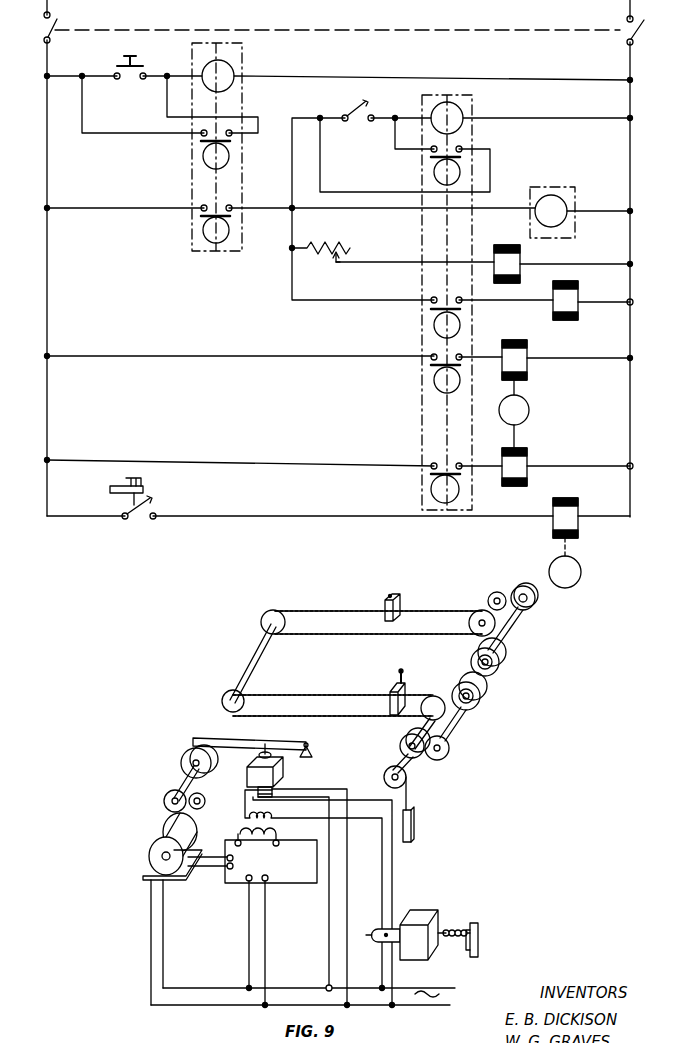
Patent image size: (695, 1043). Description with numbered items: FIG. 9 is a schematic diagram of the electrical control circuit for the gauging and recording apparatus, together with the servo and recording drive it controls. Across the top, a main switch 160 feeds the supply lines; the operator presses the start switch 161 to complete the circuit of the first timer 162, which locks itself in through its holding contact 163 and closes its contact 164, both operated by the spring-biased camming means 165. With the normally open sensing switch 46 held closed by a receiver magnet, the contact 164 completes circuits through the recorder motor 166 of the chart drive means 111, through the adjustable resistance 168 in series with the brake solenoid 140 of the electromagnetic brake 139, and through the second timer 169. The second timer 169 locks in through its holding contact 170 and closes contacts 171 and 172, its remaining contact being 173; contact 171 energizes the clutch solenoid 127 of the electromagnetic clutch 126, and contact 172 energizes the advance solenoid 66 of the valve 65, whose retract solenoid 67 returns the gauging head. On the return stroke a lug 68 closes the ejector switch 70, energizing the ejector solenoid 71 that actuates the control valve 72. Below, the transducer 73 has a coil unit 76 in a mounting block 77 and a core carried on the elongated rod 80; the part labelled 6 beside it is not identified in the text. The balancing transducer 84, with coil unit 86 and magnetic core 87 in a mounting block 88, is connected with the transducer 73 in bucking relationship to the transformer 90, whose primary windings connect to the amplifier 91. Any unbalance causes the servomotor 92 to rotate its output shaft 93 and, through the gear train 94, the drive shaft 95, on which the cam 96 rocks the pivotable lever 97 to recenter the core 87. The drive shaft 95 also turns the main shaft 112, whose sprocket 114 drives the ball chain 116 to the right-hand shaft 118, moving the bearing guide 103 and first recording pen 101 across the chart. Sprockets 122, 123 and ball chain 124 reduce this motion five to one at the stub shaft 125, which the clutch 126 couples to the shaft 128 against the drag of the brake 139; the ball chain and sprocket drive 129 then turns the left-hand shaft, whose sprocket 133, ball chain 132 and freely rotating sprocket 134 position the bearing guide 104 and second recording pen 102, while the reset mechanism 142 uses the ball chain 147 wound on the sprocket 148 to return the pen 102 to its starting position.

The main switch 160 is at (58, 22).
The start switch 161 is at (141, 58).
The first timer 162 is at (230, 66).
The holding contact 163 is at (202, 143).
The camming means 165 is at (206, 162).
The contact 164 is at (205, 220).
The sensing switch 46 is at (358, 105).
The second timer 169 is at (462, 112).
The holding contact 170 is at (436, 165).
The electric drive means 111 is at (539, 189).
The recorder motor 166 is at (566, 210).
The adjustable resistance 168 is at (328, 247).
The brake solenoid 140 is at (521, 258).
The clutch solenoid 127 is at (580, 297).
The contact 171 is at (436, 318).
The contacts 172 is at (436, 372).
The advance solenoid 66 is at (525, 355).
The valve 65 is at (526, 403).
The retract solenoid 67 is at (526, 461).
The contact 173 is at (432, 480).
The lug 68 is at (133, 499).
The ejector switch 70 is at (156, 510).
The ejector solenoid 71 is at (578, 508).
The control valve 72 is at (580, 566).
The ball chain 116 is at (324, 608).
The sprocket 114 is at (276, 610).
The right-hand shaft 118 is at (484, 610).
The main shaft 112 is at (256, 655).
The sprocket 134 is at (222, 695).
The ball chain 132 is at (336, 685).
The sprocket 133 is at (440, 698).
The bearing guide 103 is at (398, 597).
The first recording pen 101 is at (388, 596).
The bearing guide 104 is at (390, 708).
The second recording pen 102 is at (400, 680).
The sprocket 122 is at (496, 592).
The ball chain 124 is at (518, 588).
The sprocket 123 is at (536, 600).
The stub shaft 125 is at (514, 628).
The electromagnetic clutch 126 is at (502, 656).
The electromagnetic brake 139 is at (484, 692).
The shaft 128 is at (460, 716).
The ball chain and sprocket drive 129 is at (455, 753).
The sprocket 148 is at (386, 780).
The ball chain 147 is at (410, 802).
The reset mechanism 142 is at (422, 826).
The cam 96 is at (186, 748).
The drive shaft 95 is at (180, 775).
The gear train 94 is at (158, 808).
The output shaft 93 is at (194, 810).
The servomotor 92 is at (162, 836).
The magnetic core 87 is at (260, 732).
The pivotable lever 97 is at (302, 742).
The coil unit 86 is at (258, 757).
The balancing transducer 84 is at (285, 775).
The mounting block 88 is at (256, 786).
The transformer 90 is at (272, 817).
The amplifier 91 is at (280, 884).
The elongated rod 80 is at (373, 940).
The mounting block 77 is at (414, 910).
The electrical transducer 73 is at (442, 909).
The coil unit 76 is at (450, 928).
The plate 6 is at (470, 955).